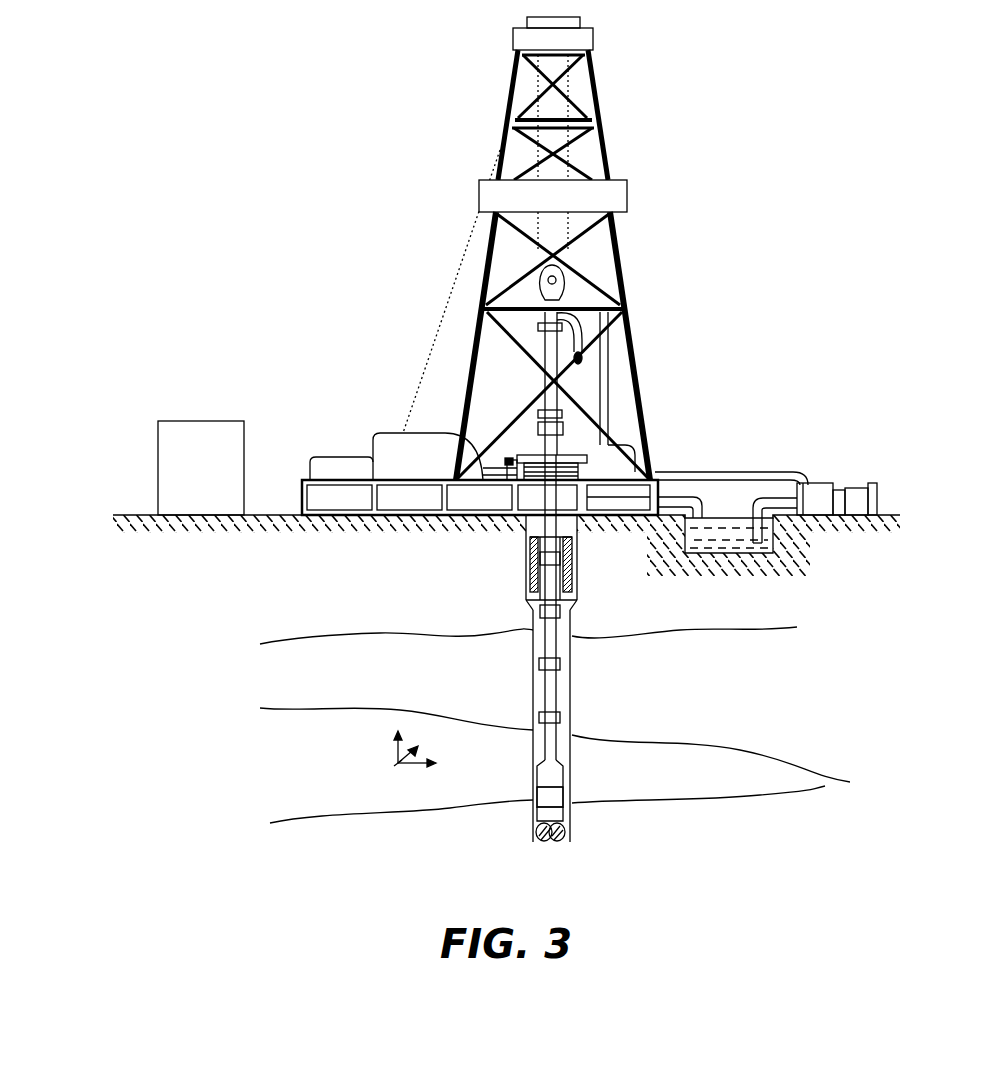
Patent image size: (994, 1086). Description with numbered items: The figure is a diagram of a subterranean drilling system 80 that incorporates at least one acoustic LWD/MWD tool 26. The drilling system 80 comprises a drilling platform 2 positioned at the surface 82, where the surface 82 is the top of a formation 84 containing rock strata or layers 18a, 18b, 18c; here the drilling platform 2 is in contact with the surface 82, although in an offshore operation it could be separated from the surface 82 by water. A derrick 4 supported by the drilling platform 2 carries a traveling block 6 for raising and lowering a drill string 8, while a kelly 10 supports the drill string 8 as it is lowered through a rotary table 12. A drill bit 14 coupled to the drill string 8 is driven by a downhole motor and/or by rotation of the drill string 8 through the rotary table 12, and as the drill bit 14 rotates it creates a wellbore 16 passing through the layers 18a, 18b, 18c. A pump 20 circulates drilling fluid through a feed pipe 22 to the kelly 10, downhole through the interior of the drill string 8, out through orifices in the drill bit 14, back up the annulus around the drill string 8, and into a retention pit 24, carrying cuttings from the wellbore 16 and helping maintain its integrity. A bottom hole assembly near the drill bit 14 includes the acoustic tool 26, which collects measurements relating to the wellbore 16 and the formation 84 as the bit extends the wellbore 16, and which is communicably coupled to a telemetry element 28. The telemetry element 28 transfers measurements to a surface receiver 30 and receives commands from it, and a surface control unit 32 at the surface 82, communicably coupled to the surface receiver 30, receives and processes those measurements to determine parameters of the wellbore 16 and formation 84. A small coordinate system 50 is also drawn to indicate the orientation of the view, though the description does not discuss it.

The drilling platform 2 is at (302, 492).
The derrick 4 is at (605, 143).
The traveling block 6 is at (562, 280).
The drill string 8 is at (555, 627).
The kelly 10 is at (551, 345).
The rotary table 12 is at (570, 453).
The drill bit 14 is at (562, 833).
The wellbore 16 is at (607, 640).
The rock strata or layer 18a is at (305, 757).
The rock strata or layer 18b is at (555, 704).
The rock strata or layer 18c is at (772, 615).
The pump 20 is at (813, 483).
The feed pipe 22 is at (722, 470).
The retention pit 24 is at (737, 535).
The acoustic LWD/MWD tool 26 is at (543, 795).
The telemetry element 28 is at (550, 775).
The surface receiver 30 is at (560, 410).
The surface control unit 32 is at (182, 479).
The coordinate system 50 is at (385, 755).
The drilling system 80 is at (745, 207).
The surface 82 is at (135, 515).
The formation 84 is at (198, 606).